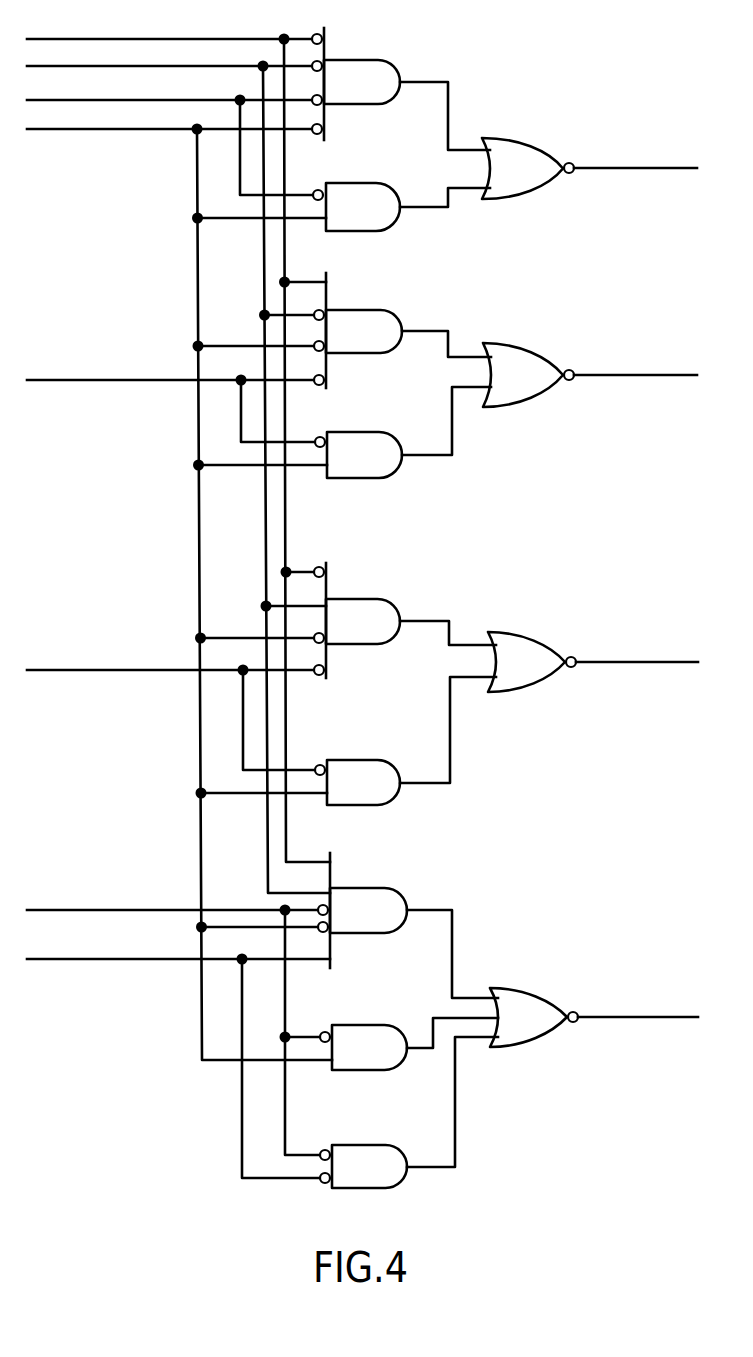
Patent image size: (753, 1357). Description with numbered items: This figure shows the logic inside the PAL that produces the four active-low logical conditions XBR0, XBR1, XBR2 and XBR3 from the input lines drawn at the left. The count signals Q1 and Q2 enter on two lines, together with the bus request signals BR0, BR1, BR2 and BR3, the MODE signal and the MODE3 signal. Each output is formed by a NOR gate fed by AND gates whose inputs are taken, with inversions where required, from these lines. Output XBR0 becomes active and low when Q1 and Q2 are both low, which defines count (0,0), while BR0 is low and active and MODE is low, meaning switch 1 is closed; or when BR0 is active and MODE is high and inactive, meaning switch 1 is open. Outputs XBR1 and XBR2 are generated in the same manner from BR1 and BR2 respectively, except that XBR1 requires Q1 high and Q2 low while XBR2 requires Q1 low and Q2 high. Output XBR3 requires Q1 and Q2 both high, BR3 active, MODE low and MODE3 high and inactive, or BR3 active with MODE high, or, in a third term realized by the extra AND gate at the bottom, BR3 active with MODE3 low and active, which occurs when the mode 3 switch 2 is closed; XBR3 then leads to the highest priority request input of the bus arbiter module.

The switch S1 1 is at (178, 437).
The Q2 input signal line 2 is at (178, 466).
The BR0 input signal line 0 is at (170, 134).
The MODE 3 input signal line 3 is at (178, 1056).
The Q1 count signal Q1 is at (178, 437).
The Q2 count signal Q2 is at (178, 466).
The BR0 bus request input BR0 is at (170, 134).
The mode signal MODE is at (179, 581).
The BR1 bus request input BR1 is at (171, 398).
The BR2 bus request input BR2 is at (171, 706).
The BR3 bus request input BR3 is at (173, 1020).
The mode 3 signal MODE3 is at (178, 1056).
The XBR0 logical condition output XBR0 is at (589, 168).
The XBR1 logical condition output XBR1 is at (590, 375).
The XBR2 logical condition output XBR2 is at (593, 662).
The XBR3 logical condition output XBR3 is at (594, 1017).